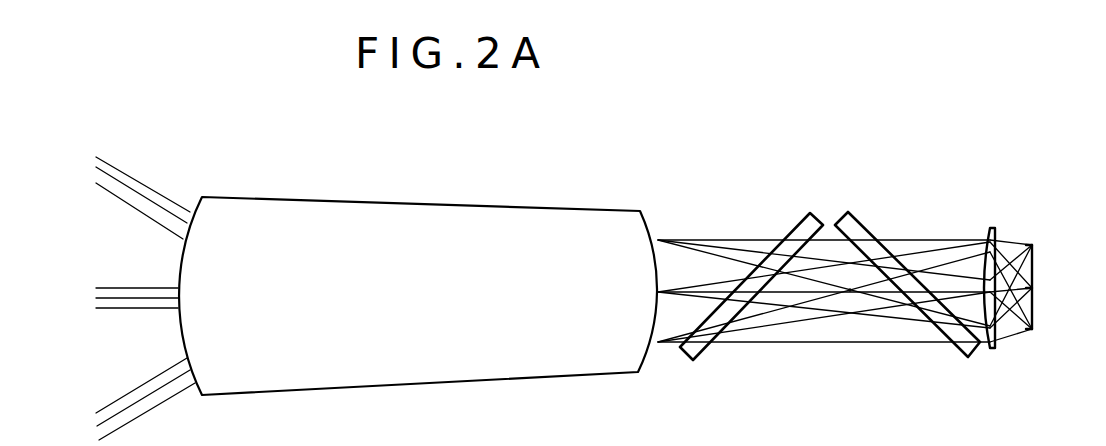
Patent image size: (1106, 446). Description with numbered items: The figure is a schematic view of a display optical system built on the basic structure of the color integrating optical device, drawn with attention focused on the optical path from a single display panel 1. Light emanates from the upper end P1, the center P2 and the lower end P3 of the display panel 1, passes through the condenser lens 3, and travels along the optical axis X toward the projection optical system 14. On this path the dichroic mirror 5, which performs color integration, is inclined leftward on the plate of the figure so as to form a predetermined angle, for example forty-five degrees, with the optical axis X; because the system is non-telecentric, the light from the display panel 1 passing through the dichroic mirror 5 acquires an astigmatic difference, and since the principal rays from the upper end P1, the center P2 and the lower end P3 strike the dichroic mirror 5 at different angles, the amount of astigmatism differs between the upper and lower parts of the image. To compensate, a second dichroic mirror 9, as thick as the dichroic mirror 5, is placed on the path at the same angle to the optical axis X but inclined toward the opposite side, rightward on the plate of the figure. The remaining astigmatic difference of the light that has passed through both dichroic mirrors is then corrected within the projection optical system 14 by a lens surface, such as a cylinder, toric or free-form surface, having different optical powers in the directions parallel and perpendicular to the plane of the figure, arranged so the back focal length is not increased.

The projection optical system 14 is at (393, 200).
The dichroic mirror 9 is at (801, 226).
The dichroic mirror 5 is at (849, 226).
The condenser lens 3 is at (995, 228).
The display panel 1 is at (1040, 262).
The optical axis X is at (798, 293).
The upper end P1 is at (1056, 252).
The center P2 is at (1056, 290).
The lower end P3 is at (1056, 330).